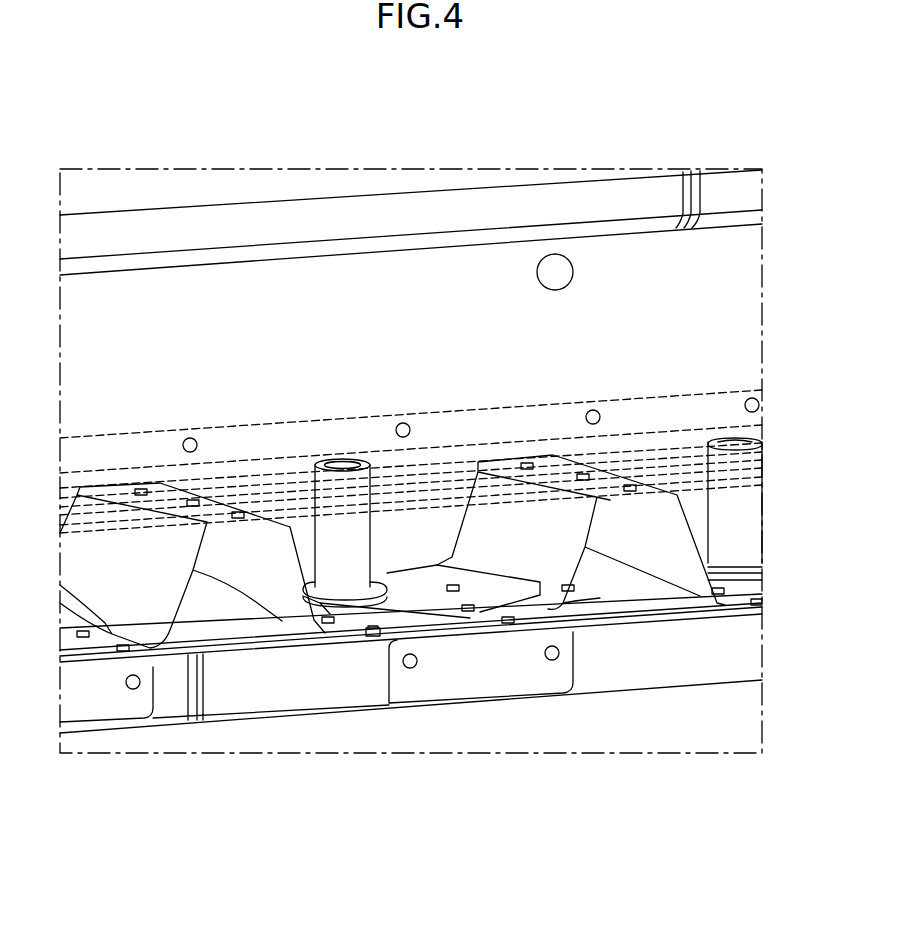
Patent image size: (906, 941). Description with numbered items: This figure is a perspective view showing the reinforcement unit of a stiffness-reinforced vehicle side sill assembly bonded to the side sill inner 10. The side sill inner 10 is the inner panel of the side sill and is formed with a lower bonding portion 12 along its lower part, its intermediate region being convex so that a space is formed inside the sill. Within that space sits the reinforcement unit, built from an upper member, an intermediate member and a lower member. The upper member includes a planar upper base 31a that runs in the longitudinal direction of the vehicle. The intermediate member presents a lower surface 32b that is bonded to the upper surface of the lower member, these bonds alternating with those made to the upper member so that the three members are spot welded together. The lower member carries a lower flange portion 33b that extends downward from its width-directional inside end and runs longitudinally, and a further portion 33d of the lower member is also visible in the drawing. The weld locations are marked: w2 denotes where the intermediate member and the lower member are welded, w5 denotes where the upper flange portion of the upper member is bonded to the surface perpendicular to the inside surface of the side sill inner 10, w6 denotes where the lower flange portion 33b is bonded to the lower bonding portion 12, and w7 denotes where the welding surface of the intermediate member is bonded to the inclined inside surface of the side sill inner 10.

The side sill inner 10 is at (373, 297).
The lower bonding portion 12 is at (263, 700).
The upper base 31a is at (250, 443).
The lower surface 32b is at (433, 613).
The lower flange portion 33b is at (500, 673).
The second bracket 33d is at (555, 563).
The welded portion between intermediate member and lower member w2 is at (373, 636).
The welded portion of upper flange portion to side sill inner w5 is at (593, 413).
The welded portion of lower flange portion to lower bonding portion w6 is at (412, 667).
The welded portion of welding surface to side sill inner w7 is at (585, 545).